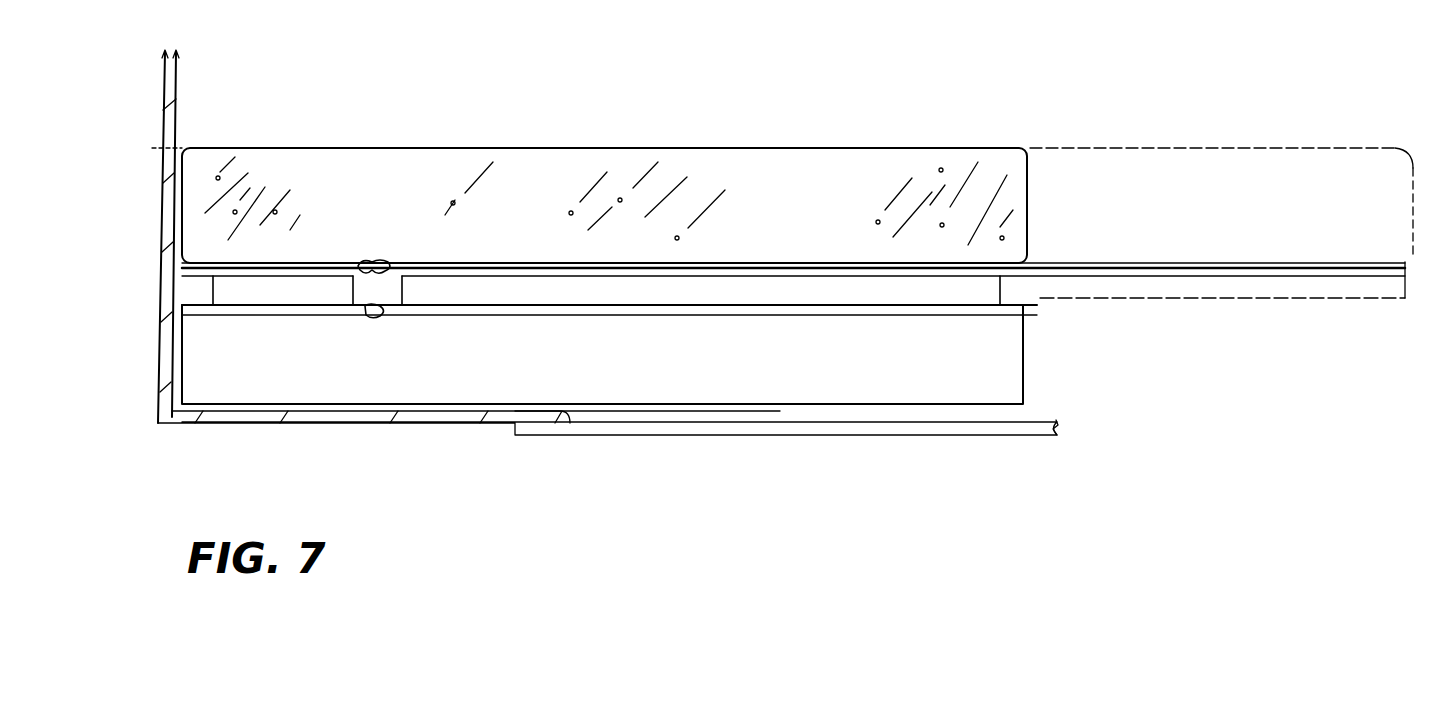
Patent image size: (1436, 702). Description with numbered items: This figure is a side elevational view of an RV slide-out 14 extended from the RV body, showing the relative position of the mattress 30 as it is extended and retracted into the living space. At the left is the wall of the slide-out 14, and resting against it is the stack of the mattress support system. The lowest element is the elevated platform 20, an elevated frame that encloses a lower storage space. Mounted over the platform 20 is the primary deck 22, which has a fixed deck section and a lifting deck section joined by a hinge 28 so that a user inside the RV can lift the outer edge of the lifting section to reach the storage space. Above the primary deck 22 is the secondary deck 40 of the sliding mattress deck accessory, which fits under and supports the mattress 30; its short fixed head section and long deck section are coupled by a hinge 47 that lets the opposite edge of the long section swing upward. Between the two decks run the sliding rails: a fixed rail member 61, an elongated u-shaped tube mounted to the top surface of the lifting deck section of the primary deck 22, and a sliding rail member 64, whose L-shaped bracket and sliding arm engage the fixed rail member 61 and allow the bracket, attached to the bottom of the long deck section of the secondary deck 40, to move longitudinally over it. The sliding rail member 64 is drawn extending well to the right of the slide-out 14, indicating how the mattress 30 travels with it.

The slide-out 14 is at (167, 105).
The mattress 30 is at (545, 220).
The secondary deck 40 is at (808, 254).
The hinge 47 is at (377, 261).
The hinge 28 is at (371, 318).
The platform 20 is at (550, 368).
The primary deck 22 is at (731, 326).
The fixed rail member 61 is at (898, 300).
The sliding rail member 64 is at (1226, 300).